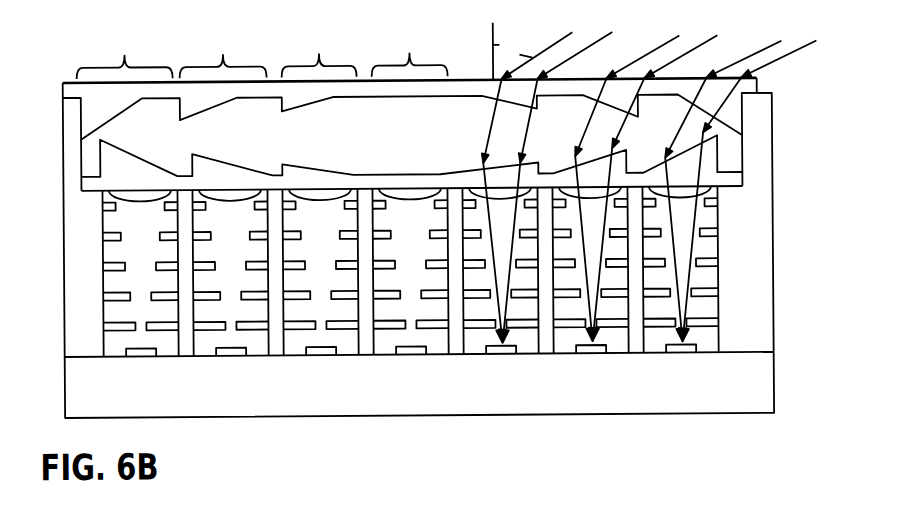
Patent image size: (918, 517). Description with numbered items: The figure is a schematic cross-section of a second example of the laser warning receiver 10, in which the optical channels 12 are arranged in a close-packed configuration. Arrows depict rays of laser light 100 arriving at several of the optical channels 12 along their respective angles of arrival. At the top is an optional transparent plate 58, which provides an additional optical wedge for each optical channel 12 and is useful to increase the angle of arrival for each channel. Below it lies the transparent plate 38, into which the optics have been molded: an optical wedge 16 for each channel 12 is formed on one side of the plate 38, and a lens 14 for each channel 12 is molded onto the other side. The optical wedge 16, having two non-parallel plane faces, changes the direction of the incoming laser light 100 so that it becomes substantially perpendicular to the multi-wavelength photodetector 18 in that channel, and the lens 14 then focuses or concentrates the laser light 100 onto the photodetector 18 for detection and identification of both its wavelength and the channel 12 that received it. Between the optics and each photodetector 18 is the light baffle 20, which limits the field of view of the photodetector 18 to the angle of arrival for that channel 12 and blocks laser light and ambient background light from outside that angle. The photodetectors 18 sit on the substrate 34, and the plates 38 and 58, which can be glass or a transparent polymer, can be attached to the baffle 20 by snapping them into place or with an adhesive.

The laser warning receiver 10 is at (652, 420).
The optical channel 12 is at (261, 53).
The lens 14 is at (313, 204).
The optical wedge 16 is at (318, 170).
The multi-wavelength photodetector 18 is at (322, 358).
The light baffle 20 is at (414, 271).
The substrate 34 is at (419, 377).
The transparent plate 38 is at (90, 186).
The transparent plate 58 is at (65, 93).
The laser light 100 is at (794, 58).